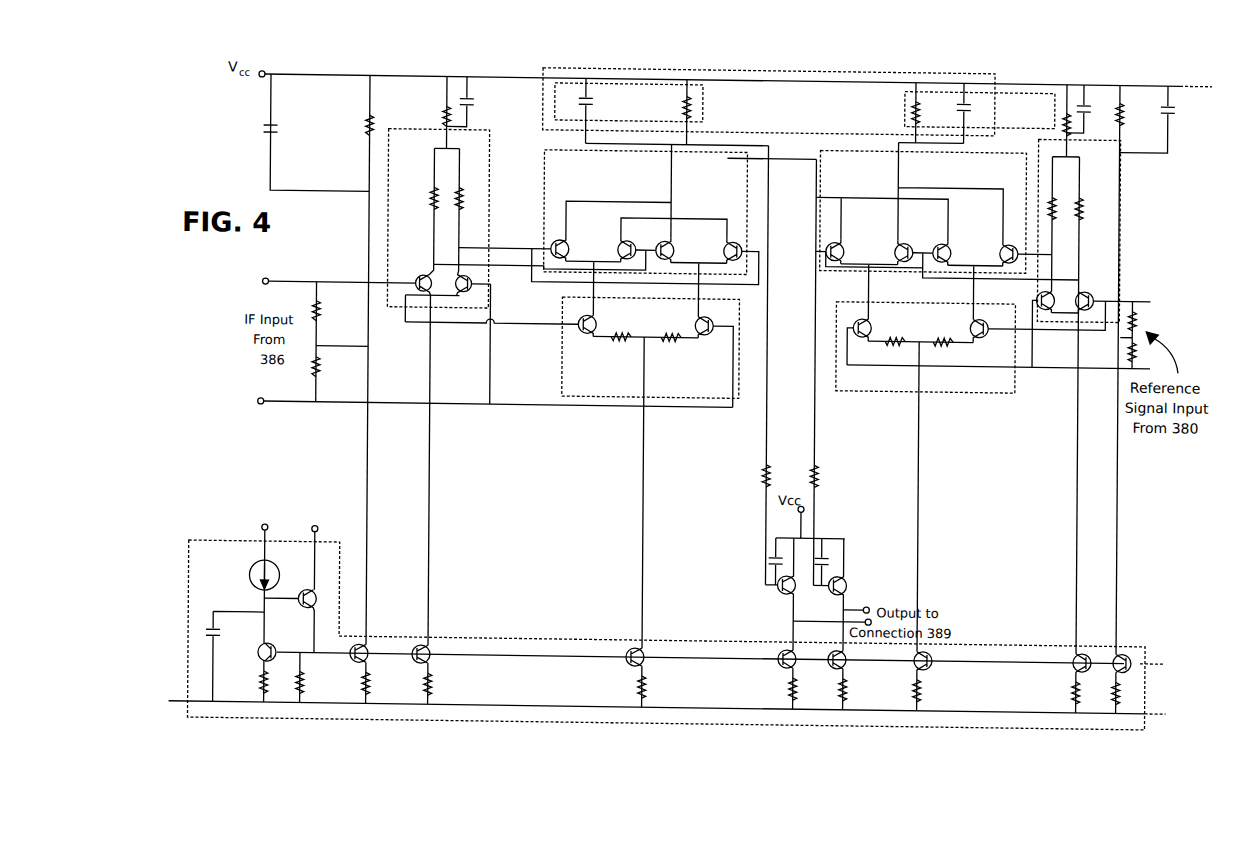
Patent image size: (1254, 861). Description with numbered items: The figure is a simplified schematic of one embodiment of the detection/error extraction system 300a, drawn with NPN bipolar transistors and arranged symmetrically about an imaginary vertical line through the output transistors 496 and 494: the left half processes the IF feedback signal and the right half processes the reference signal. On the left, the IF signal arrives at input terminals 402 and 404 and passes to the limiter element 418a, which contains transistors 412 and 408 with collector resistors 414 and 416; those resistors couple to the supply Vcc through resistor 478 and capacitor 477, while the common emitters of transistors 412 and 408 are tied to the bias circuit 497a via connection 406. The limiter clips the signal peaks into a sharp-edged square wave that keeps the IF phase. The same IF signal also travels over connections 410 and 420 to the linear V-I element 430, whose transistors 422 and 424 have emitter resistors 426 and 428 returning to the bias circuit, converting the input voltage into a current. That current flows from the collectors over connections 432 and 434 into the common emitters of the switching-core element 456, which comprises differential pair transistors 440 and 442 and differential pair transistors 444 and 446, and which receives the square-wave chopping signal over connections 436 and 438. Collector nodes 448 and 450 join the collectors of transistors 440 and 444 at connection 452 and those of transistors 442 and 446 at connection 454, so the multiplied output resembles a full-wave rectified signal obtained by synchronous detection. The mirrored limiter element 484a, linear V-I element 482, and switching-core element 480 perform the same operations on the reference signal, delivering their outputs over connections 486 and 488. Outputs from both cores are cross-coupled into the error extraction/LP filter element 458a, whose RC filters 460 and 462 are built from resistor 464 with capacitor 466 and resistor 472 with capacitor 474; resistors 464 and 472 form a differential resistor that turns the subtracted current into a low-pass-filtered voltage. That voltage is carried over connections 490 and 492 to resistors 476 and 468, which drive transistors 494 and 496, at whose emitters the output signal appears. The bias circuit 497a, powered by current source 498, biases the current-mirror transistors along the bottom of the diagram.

The detection/error extraction system 300a is at (241, 106).
The input terminal 402 is at (262, 279).
The input terminal 404 is at (262, 401).
The connection 406 is at (432, 395).
The transistor 408 is at (437, 309).
The connection 410 is at (346, 281).
The transistor 412 is at (424, 274).
The resistor 414 is at (433, 196).
The resistor 416 is at (461, 198).
The limiter element 418a is at (438, 218).
The connection 420 is at (697, 404).
The transistor 422 is at (597, 323).
The transistor 424 is at (697, 325).
The resistor 426 is at (626, 331).
The resistor 428 is at (673, 340).
The linear voltage to current (V-I) element 430 is at (651, 347).
The connection 432 is at (566, 292).
The connection 434 is at (702, 290).
The connection 436 is at (516, 241).
The connection 438 is at (524, 266).
The transistor 440 is at (570, 239).
The transistor 442 is at (630, 236).
The transistor 444 is at (673, 242).
The transistor 446 is at (742, 238).
The collector connection 448 is at (567, 197).
The collector connection 450 is at (690, 214).
The connection 452 is at (674, 185).
The connection 454 is at (812, 157).
The switching-core element 456 is at (646, 212).
The error extraction/low-pass (LP) filter element 458a is at (769, 102).
The RC filter 460 is at (629, 102).
The RC filter 462 is at (980, 110).
The resistor 464 is at (692, 110).
The capacitor 466 is at (583, 105).
The resistor 468 is at (764, 466).
The resistor 472 is at (912, 110).
The capacitor 474 is at (964, 103).
The resistor 476 is at (818, 468).
The capacitor 477 is at (470, 100).
The resistor 478 is at (444, 112).
The switching-core element 480 is at (923, 212).
The linear V-I element 482 is at (924, 477).
The limiter element 484a is at (1092, 226).
The connection 486 is at (854, 200).
The connection 488 is at (896, 170).
The connection 490 is at (815, 288).
The connection 492 is at (769, 396).
The transistor 494 is at (848, 587).
The transistor 496 is at (782, 586).
The bias circuit 497a is at (270, 610).
The current source 498 is at (280, 563).